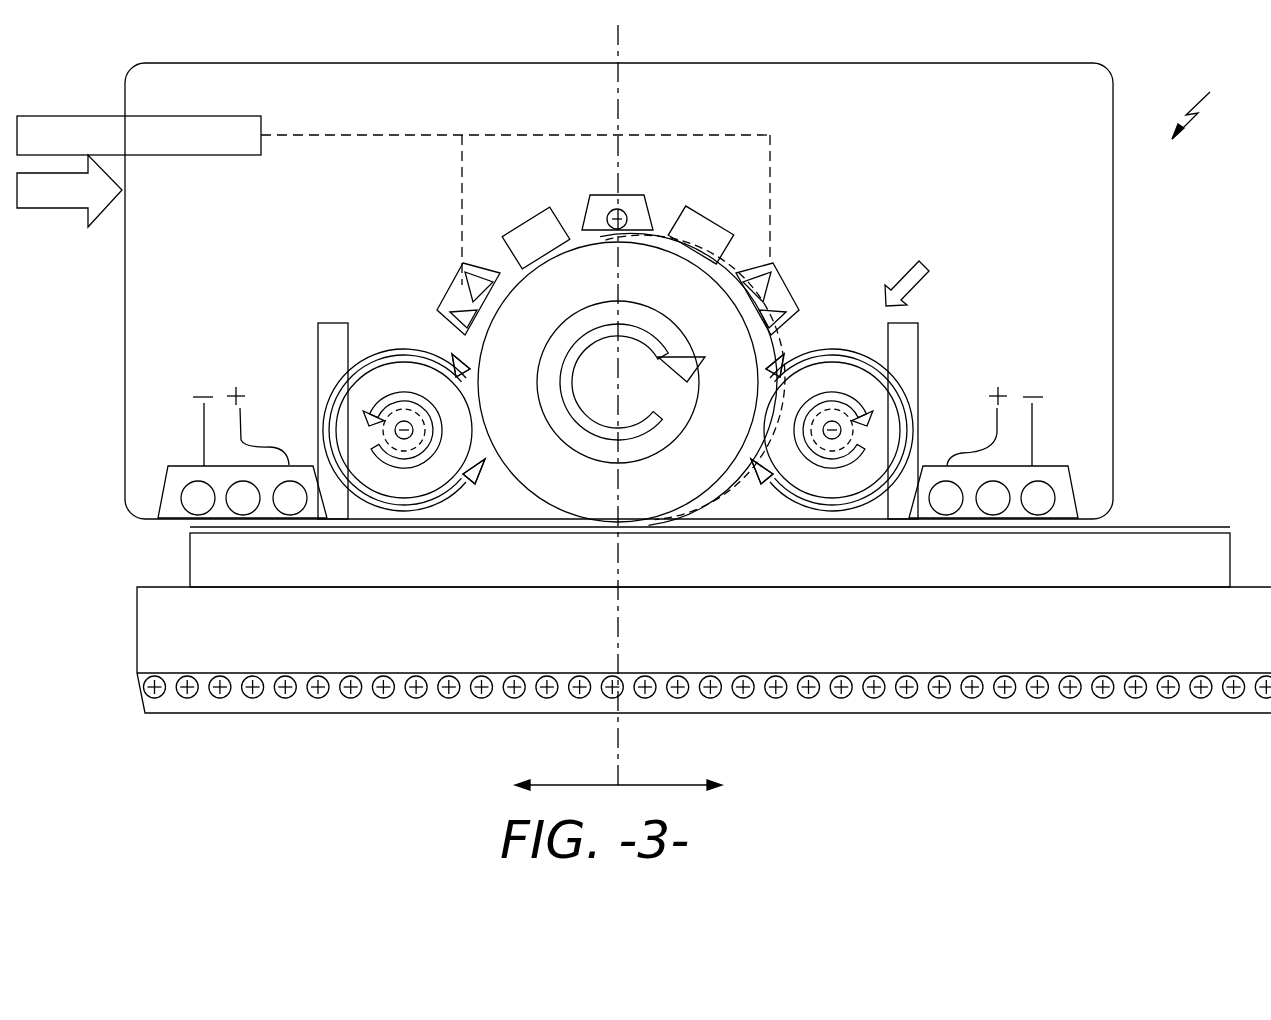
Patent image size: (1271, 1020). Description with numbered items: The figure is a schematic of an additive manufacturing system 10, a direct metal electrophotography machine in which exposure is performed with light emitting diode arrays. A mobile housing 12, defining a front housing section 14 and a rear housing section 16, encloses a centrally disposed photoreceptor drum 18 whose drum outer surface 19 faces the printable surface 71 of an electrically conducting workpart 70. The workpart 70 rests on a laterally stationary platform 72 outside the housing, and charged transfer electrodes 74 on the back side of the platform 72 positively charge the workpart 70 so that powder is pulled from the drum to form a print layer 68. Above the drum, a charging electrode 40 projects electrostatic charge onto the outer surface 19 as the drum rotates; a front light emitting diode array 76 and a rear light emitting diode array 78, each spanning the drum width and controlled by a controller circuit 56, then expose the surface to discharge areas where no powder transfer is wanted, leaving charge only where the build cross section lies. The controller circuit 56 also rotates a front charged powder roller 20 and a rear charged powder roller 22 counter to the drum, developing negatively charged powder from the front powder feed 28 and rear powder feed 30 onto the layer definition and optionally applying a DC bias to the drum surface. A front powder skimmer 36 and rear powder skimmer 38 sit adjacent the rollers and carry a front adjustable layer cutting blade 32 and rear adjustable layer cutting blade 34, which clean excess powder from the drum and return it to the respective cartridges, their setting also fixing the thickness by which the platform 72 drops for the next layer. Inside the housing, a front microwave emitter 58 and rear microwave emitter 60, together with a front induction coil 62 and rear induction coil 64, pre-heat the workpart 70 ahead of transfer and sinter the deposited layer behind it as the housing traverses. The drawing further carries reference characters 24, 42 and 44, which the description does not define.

The additive manufacturing system 10 is at (1214, 99).
The mobile housing 12 is at (1113, 283).
The front housing section 14 is at (664, 768).
The rear housing section 16 is at (597, 768).
The photoreceptor drum 18 is at (572, 490).
The drum outer surface 19 is at (500, 568).
The front charged powder roller 20 is at (883, 432).
The rear charged powder roller 22 is at (347, 435).
The insertion direction arrow 24 is at (935, 268).
The front powder feed 28 is at (917, 355).
The rear powder feed 30 is at (316, 355).
The front adjustable layer cutting blade 32 is at (752, 472).
The rear adjustable layer cutting blade 34 is at (485, 458).
The front powder skimmer 36 is at (777, 343).
The rear powder skimmer 38 is at (462, 338).
The charging electrode 40 is at (625, 195).
The exposure unit 42 is at (693, 212).
The power switch 44 is at (520, 222).
The controller circuit 56 is at (88, 115).
The front microwave emitter 58 is at (1053, 488).
The rear microwave emitter 60 is at (182, 490).
The front induction coil 62 is at (958, 490).
The rear induction coil 64 is at (273, 480).
The print layer 68 is at (188, 528).
The workpart 70 is at (188, 558).
The printable surface 71 is at (1205, 482).
The laterally stationary platform 72 is at (325, 648).
The charged transfer electrode 74 is at (970, 698).
The front light emitting diode array 76 is at (777, 287).
The rear light emitting diode array 78 is at (455, 285).